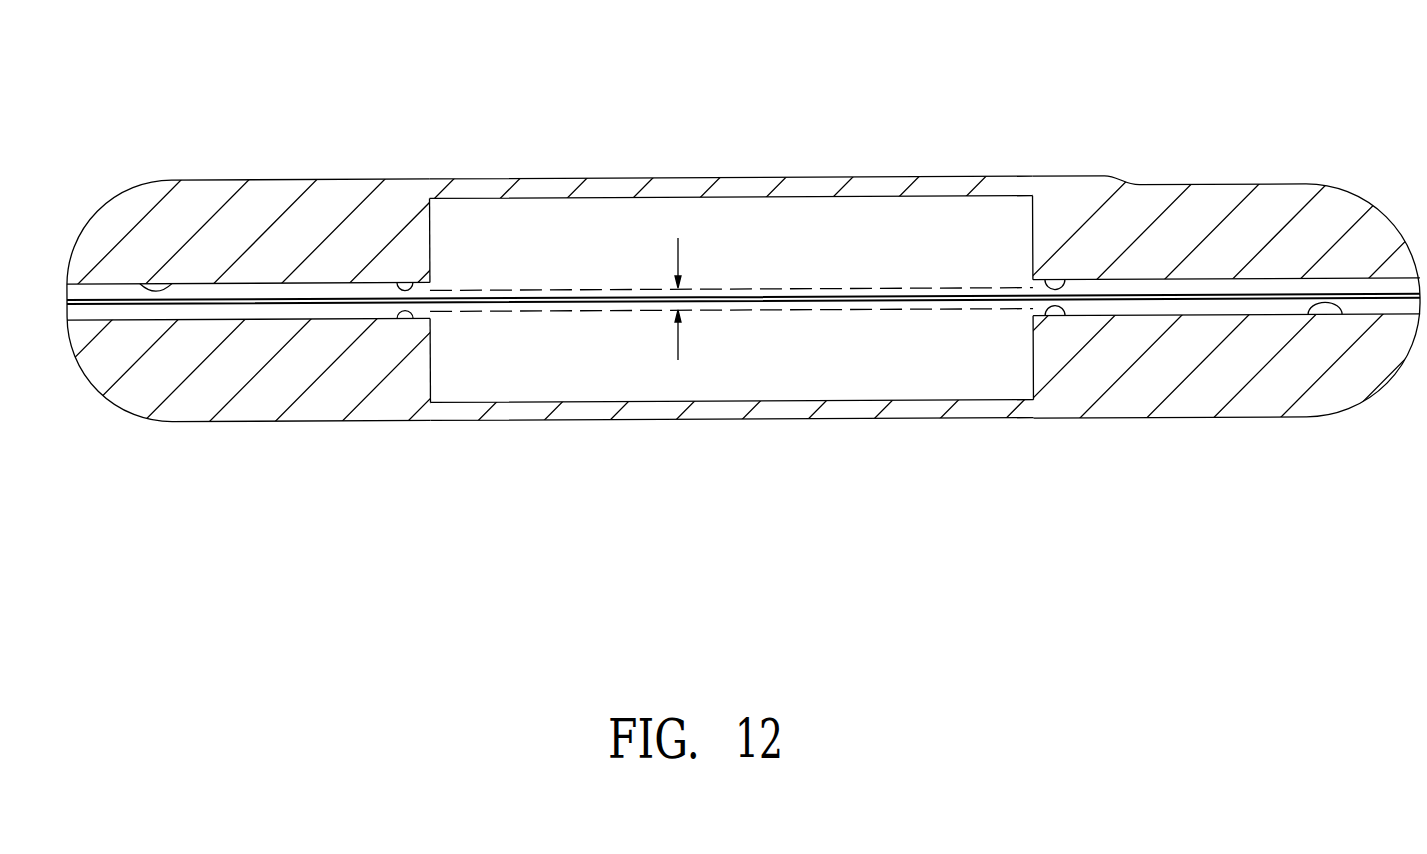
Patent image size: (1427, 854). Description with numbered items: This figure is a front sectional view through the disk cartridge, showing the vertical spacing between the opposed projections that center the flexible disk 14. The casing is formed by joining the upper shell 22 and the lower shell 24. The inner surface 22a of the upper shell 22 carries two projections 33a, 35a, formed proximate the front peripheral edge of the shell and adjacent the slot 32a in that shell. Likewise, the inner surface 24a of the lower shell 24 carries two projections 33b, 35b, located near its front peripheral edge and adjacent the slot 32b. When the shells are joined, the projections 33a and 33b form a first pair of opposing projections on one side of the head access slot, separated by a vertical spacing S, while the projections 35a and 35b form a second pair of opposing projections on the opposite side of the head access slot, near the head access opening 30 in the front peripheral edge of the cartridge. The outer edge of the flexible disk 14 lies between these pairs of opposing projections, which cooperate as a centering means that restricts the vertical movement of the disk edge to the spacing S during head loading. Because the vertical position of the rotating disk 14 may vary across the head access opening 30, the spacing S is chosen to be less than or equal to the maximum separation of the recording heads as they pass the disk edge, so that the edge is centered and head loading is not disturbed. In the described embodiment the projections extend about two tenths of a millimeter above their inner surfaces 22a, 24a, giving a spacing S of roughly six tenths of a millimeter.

The flexible disk 14 is at (273, 305).
The upper shell 22 is at (268, 208).
The inner surface of the upper shell 22a is at (148, 285).
The lower shell 24 is at (1187, 398).
The inner surface of the lower shell 24a is at (1330, 306).
The head access opening 30 is at (833, 362).
The slot in the upper shell 32a is at (432, 240).
The slot in the lower shell 32b is at (432, 363).
The projection 33a is at (1062, 278).
The projection 33b is at (1058, 320).
The projection 35a is at (402, 275).
The projection 35b is at (402, 320).
The vertical spacing S is at (691, 290).